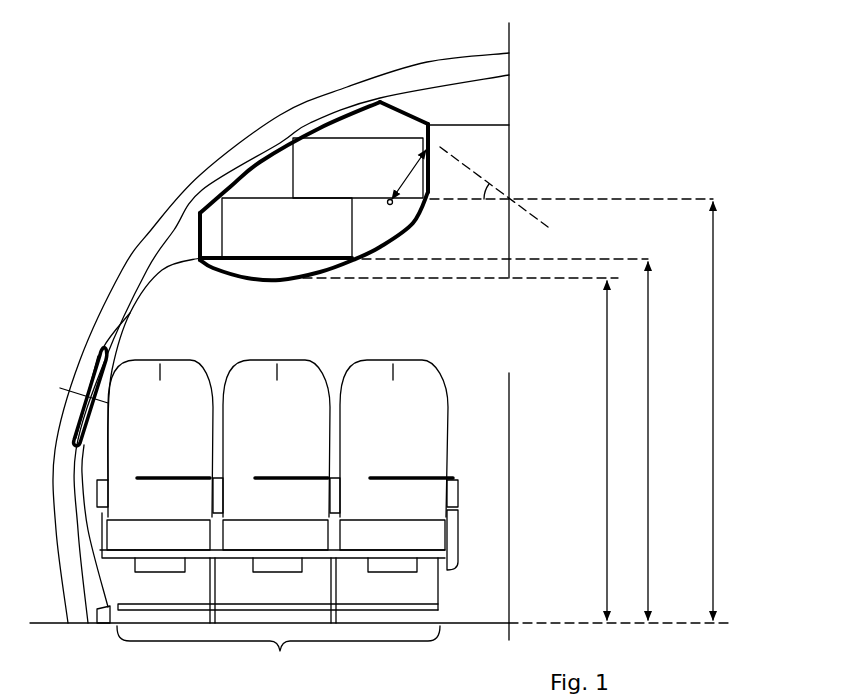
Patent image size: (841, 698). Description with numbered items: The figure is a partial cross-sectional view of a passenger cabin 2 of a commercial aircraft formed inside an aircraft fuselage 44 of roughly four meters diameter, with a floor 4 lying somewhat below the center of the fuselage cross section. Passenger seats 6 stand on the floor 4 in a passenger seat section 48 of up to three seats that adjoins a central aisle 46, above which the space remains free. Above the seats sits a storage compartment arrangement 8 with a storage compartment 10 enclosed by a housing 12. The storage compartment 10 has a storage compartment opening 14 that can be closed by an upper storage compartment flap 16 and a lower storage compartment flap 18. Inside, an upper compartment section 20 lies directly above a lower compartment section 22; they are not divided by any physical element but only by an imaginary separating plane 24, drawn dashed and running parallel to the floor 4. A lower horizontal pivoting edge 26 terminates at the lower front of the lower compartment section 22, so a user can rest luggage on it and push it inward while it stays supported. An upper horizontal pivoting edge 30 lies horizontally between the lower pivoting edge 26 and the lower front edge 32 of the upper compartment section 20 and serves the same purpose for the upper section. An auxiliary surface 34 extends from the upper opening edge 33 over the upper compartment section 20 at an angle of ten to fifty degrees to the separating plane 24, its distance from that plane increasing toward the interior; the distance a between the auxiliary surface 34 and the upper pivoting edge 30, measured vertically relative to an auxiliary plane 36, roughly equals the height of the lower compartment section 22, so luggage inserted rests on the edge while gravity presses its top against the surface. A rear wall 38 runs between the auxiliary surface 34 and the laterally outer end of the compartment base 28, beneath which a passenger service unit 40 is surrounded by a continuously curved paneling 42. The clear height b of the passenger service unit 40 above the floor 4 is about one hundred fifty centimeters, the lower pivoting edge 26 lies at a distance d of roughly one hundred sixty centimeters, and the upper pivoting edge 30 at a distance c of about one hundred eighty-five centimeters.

The passenger cabin 2 is at (592, 88).
The floor 4 is at (474, 619).
The passenger seat 6 is at (382, 434).
The storage compartment arrangement 8 is at (350, 84).
The storage compartment 10 is at (206, 204).
The housing 12 is at (258, 158).
The storage compartment opening 14 is at (395, 222).
The upper storage compartment flap 16 is at (433, 149).
The lower storage compartment flap 18 is at (383, 244).
The upper compartment section 20 is at (404, 128).
The lower compartment section 22 is at (331, 273).
The separating plane 24 is at (478, 196).
The lower horizontal pivoting edge 26 is at (362, 254).
The compartment base 28 is at (252, 254).
The upper horizontal pivoting edge 30 is at (426, 208).
The lower front edge 32 is at (435, 183).
The upper opening edge 33 is at (430, 124).
The auxiliary surface 34 is at (386, 112).
The auxiliary plane 36 is at (538, 220).
The rear wall 38 is at (316, 142).
The passenger service unit 40 is at (272, 277).
The paneling 42 is at (218, 264).
The aircraft fuselage 44 is at (142, 245).
The central aisle 46 is at (535, 619).
The passenger seat section 48 is at (272, 597).
The distance of upper pivoting edge/auxiliary surface a is at (409, 174).
The height of passenger service unit b is at (461, 449).
The distance of upper pivoting edge/floor c is at (719, 411).
The distance of lower pivoting edge/floor d is at (513, 439).